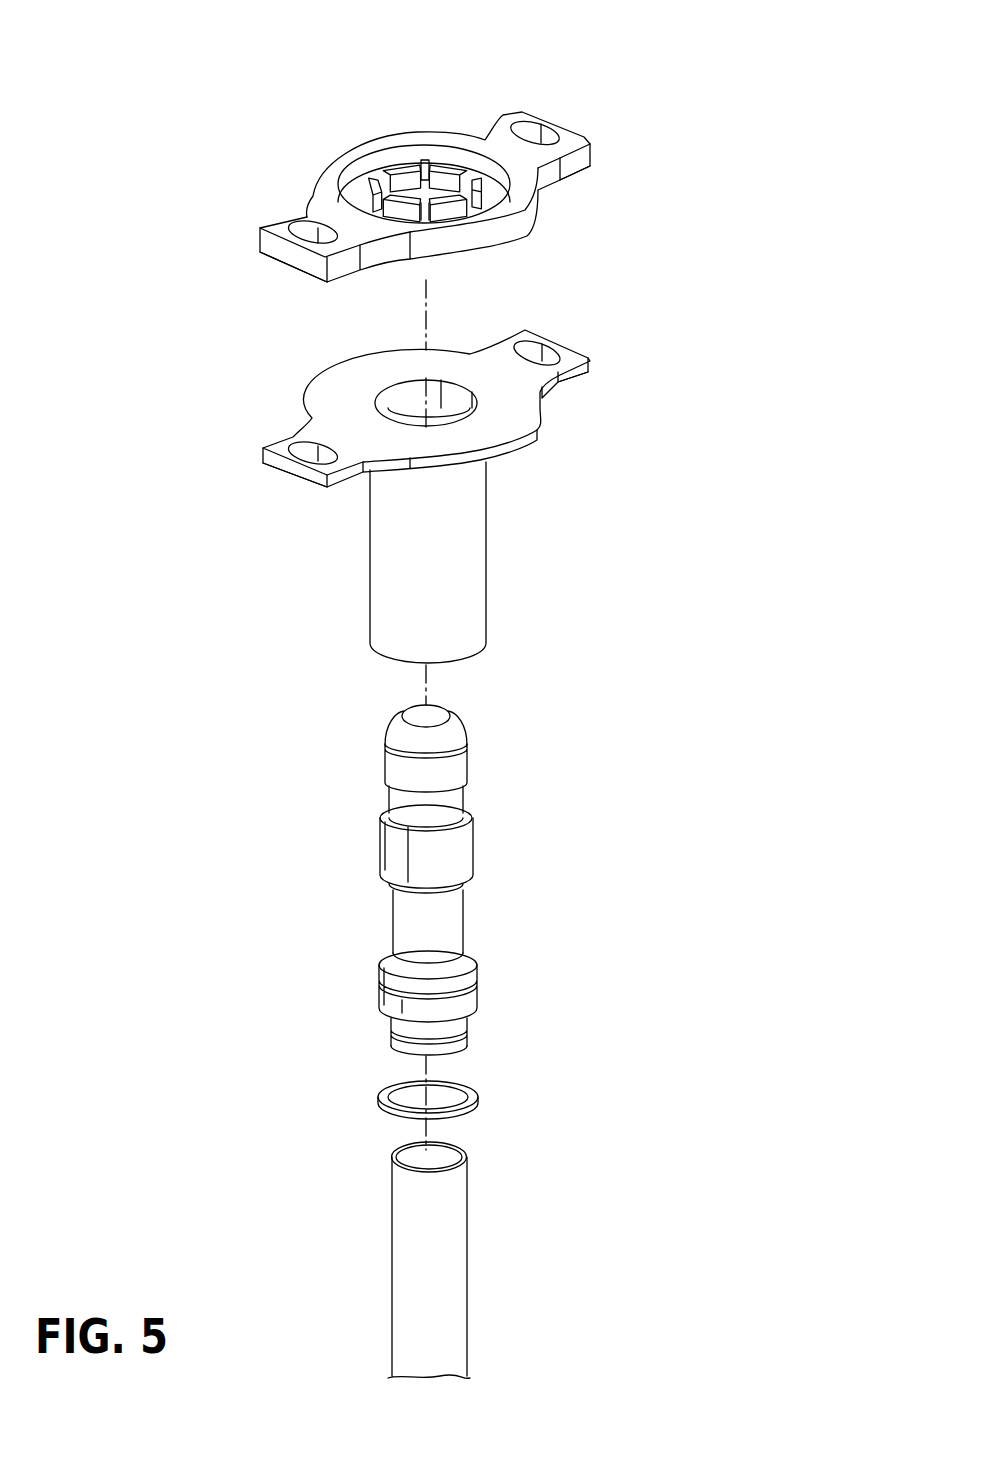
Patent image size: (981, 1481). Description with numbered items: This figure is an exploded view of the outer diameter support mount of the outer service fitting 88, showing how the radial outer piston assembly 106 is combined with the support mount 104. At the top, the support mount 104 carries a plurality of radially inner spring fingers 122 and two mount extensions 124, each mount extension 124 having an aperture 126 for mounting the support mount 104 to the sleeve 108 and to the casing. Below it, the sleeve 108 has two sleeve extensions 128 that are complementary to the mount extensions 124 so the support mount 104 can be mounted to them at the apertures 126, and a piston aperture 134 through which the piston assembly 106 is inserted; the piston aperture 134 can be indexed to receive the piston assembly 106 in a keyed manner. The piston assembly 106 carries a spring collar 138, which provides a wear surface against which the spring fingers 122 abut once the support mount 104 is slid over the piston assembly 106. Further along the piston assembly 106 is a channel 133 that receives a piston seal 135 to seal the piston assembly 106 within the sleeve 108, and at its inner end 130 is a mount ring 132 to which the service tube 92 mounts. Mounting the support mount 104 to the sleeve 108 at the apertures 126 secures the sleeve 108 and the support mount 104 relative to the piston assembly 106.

The outer service fitting 88 is at (109, 531).
The service tube 92 is at (445, 1212).
The support mount 104 is at (429, 170).
The outer piston assembly 106 is at (492, 875).
The sleeve 108 is at (457, 580).
The spring fingers 122 is at (438, 160).
The mount extensions 124 is at (577, 158).
The aperture 126 is at (543, 134).
The sleeve extensions 128 is at (577, 372).
The inner end 130 is at (424, 707).
The mount ring 132 is at (467, 1035).
The channel 133 is at (477, 978).
The piston aperture 134 is at (403, 402).
The piston seal 135 is at (478, 1107).
The spring collar 138 is at (457, 848).